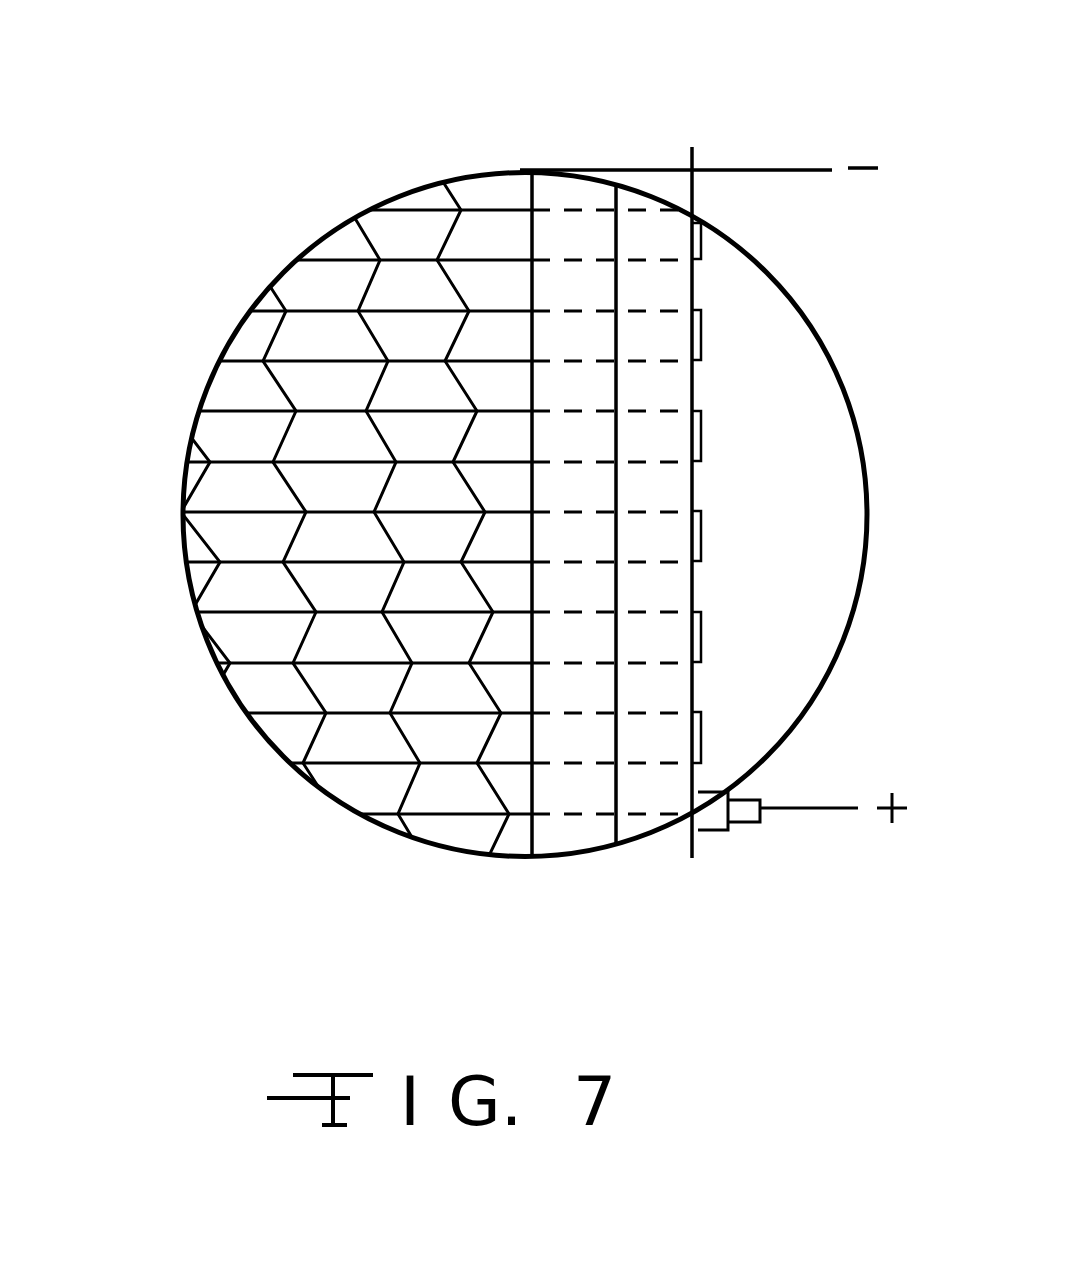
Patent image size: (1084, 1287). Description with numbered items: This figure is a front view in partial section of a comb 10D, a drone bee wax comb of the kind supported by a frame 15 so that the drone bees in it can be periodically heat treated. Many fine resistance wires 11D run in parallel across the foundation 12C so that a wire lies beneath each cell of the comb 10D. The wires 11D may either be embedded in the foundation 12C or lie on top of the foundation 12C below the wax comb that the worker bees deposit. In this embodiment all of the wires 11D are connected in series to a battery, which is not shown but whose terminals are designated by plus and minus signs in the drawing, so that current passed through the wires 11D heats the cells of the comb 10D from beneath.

The comb 10D is at (742, 120).
The foundation 12C is at (318, 224).
The wires 11D is at (407, 253).
The frame 15 is at (590, 388).